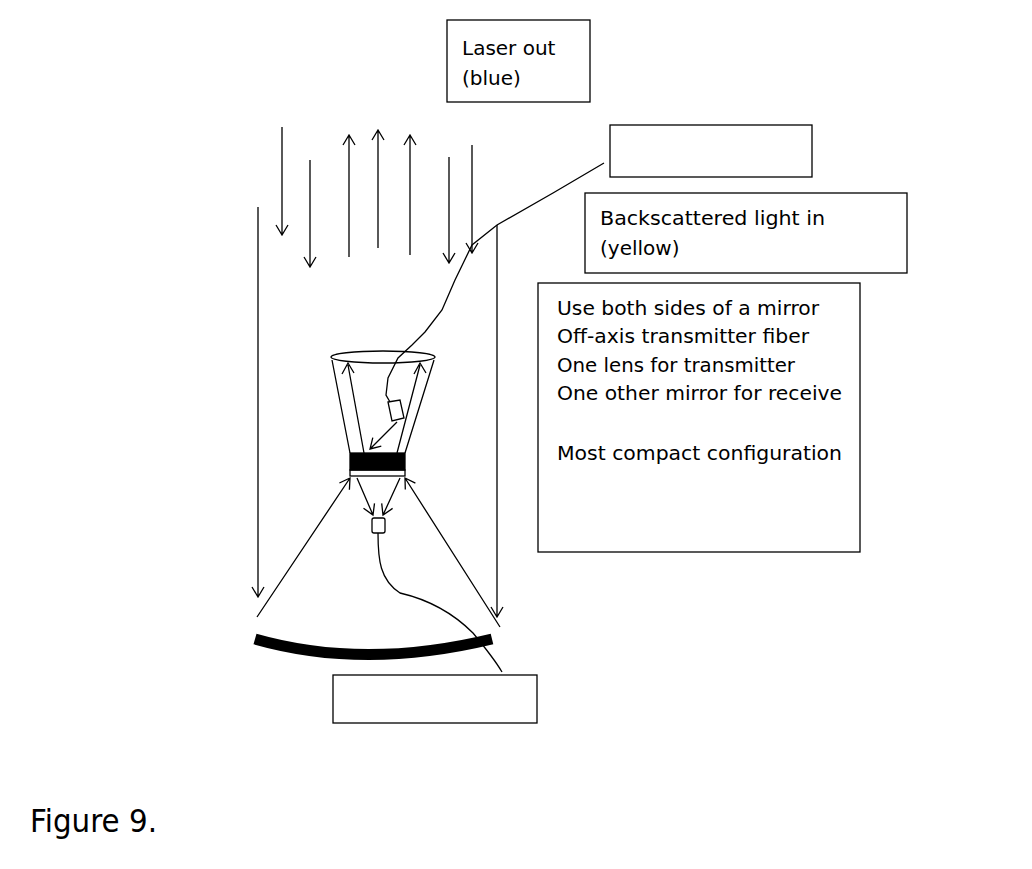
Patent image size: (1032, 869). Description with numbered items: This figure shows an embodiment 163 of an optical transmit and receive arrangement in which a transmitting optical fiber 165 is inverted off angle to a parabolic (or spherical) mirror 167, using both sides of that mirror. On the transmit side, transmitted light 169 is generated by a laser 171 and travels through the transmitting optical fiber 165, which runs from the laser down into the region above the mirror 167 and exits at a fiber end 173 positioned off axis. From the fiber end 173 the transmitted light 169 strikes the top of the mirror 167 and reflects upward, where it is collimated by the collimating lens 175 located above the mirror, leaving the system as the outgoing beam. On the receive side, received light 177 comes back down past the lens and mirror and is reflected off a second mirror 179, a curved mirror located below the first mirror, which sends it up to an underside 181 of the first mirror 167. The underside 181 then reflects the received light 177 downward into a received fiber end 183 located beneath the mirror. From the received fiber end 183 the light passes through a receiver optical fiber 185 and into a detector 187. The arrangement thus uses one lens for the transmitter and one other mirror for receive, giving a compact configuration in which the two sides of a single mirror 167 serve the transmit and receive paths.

The embodiment 163 is at (160, 249).
The transmitting optical fiber 165 is at (553, 193).
The mirror 167 is at (350, 453).
The transmitted light 169 is at (410, 163).
The laser 171 is at (681, 125).
The fiber end 173 is at (404, 405).
The collimating lens 175 is at (332, 358).
The received light 177 is at (258, 498).
The second mirror 179 is at (300, 657).
The underside 181 is at (350, 480).
The received fiber end 183 is at (386, 535).
The receiver optical fiber 185 is at (489, 650).
The detector 187 is at (488, 723).